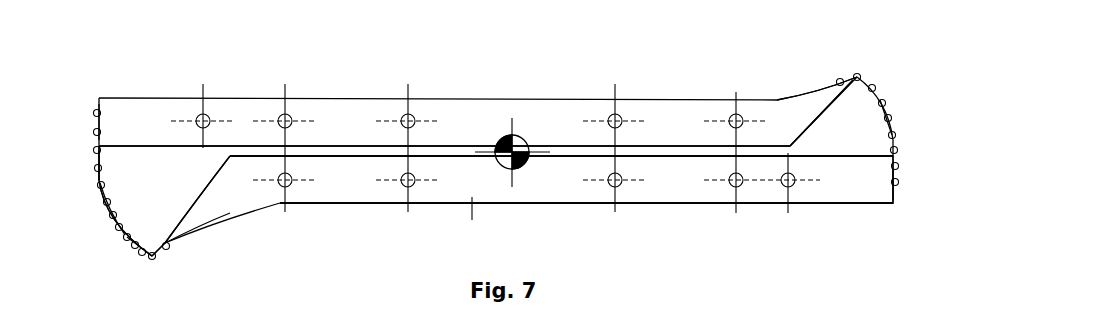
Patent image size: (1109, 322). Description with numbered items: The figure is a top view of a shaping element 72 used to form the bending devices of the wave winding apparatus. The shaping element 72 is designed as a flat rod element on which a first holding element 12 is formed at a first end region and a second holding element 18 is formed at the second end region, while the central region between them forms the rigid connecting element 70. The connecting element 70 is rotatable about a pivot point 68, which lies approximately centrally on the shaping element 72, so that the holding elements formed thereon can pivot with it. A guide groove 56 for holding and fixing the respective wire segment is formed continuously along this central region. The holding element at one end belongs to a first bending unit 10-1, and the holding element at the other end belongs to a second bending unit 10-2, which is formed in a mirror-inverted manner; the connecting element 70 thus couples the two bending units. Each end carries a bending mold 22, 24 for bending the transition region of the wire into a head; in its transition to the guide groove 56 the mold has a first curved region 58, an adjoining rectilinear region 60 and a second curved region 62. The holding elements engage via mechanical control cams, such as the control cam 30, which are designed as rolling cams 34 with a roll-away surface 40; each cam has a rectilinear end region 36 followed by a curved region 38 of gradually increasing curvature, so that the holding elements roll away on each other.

The first holding element 12 is at (184, 83).
The rectilinear region 36 is at (885, 187).
The first control cam 30 is at (105, 173).
The rolling cam 34 is at (113, 205).
The roll-away surface 40 is at (888, 130).
The curved region 38 is at (110, 232).
The first bending unit 10-1 is at (84, 242).
The second curved region 62 is at (168, 238).
The rectilinear region 60 is at (183, 213).
The bending mold 22 is at (199, 199).
The first curved region 58 is at (230, 160).
The guide groove 56 is at (362, 145).
The pivot point 68 is at (525, 130).
The connecting element 70 is at (472, 197).
The shaping element 72 is at (738, 63).
The bending mold 24 is at (825, 117).
The second holding element 18 is at (830, 223).
The second bending unit 10-2 is at (917, 198).